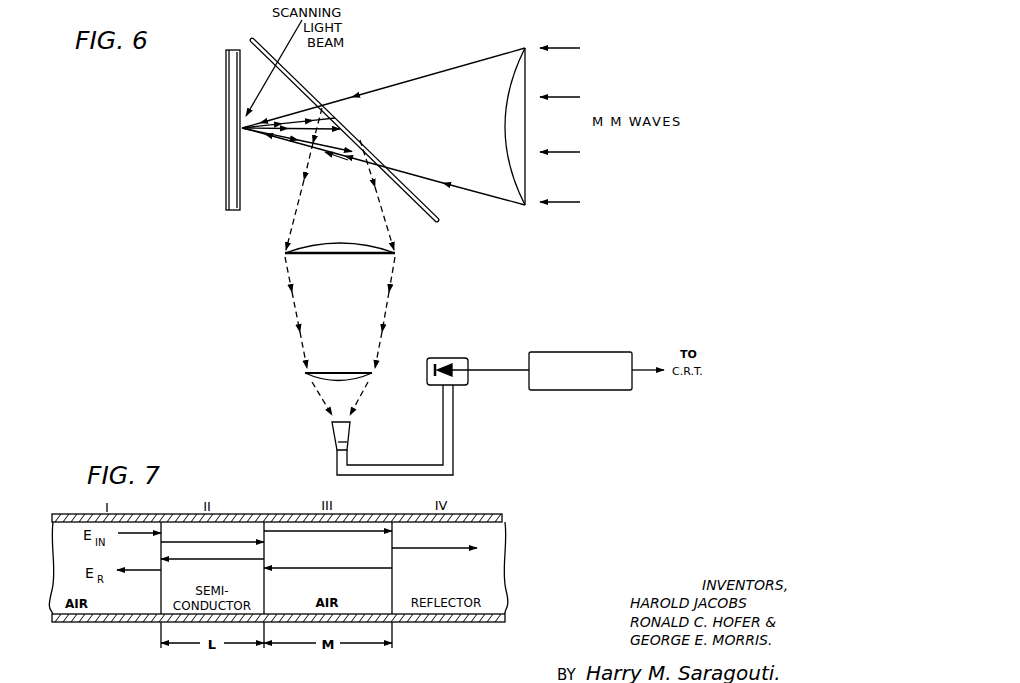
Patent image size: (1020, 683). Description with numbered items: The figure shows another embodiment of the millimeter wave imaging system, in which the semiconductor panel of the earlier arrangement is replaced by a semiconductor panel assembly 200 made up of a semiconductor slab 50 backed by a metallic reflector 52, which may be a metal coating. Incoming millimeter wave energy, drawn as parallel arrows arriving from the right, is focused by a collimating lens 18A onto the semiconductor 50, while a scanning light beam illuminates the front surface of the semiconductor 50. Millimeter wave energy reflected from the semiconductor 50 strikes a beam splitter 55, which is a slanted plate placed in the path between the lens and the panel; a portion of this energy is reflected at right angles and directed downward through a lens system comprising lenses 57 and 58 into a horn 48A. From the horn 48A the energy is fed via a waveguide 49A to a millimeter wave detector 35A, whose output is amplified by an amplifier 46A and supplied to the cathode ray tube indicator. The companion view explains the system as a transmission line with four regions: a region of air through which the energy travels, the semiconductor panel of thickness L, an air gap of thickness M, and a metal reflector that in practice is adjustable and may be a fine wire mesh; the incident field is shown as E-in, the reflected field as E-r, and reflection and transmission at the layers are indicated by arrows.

The semiconductor panel assembly 200 is at (220, 97).
The metallic reflector 52 is at (226, 197).
The semiconductor slab 50 is at (240, 203).
The beam splitter 55 is at (303, 83).
The collimating lens 18A is at (507, 108).
The lens 57 is at (340, 243).
The lens 58 is at (347, 371).
The horn 48A is at (332, 430).
The waveguide 49A is at (453, 436).
The millimeter wave detector 35A is at (455, 358).
The amplifier 46A is at (583, 352).